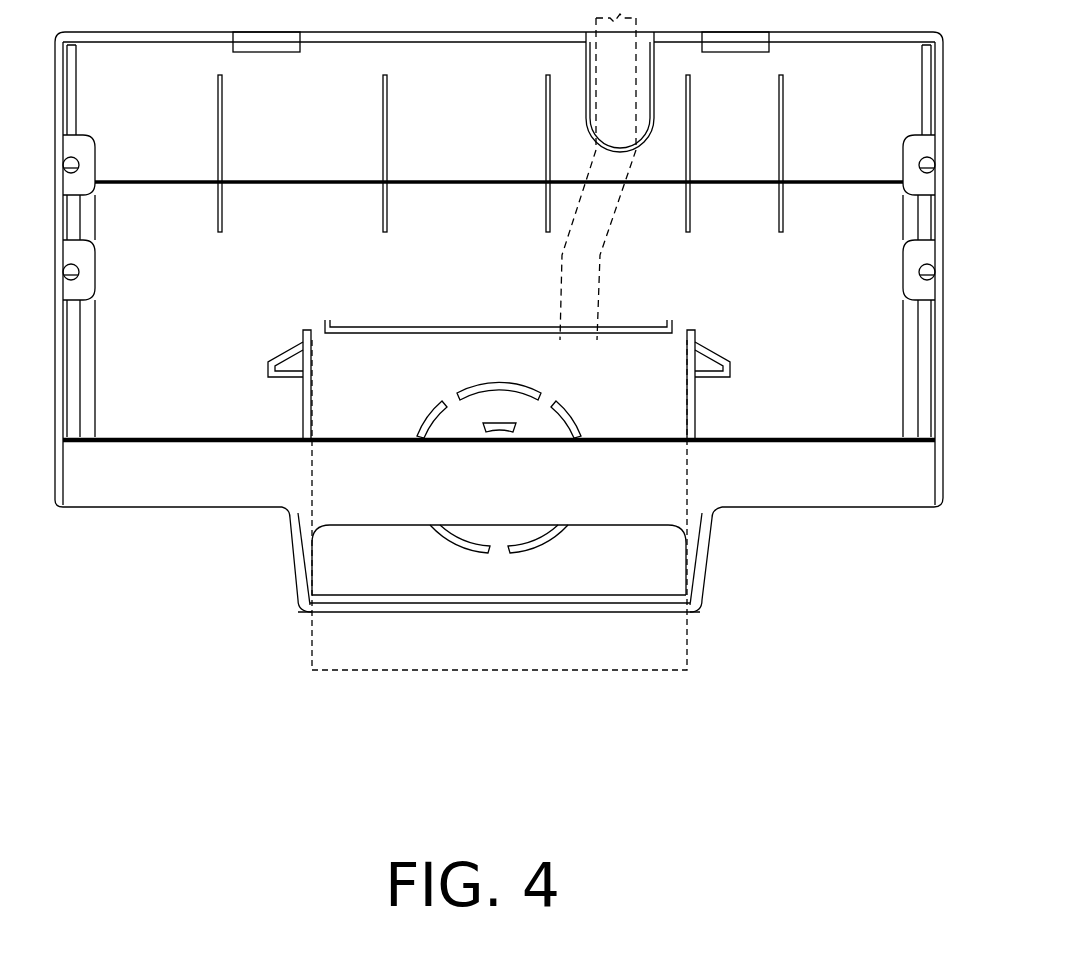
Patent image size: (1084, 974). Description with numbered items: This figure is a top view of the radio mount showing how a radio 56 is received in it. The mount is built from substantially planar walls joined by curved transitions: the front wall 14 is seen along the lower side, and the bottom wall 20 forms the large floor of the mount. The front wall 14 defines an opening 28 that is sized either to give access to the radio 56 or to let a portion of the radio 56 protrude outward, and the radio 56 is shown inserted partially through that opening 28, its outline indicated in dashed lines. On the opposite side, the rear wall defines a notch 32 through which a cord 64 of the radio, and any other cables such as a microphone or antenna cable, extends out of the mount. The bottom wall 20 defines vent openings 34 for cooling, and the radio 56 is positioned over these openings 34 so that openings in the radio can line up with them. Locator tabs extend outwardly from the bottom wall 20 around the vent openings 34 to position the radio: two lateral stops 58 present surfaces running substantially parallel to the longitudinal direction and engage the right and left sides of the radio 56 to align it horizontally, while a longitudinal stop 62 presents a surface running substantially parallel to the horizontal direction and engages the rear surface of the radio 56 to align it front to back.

The front wall 14 is at (516, 494).
The bottom wall 20 is at (823, 376).
The opening 28 is at (317, 527).
The notch 32 is at (656, 68).
The openings 34 is at (460, 391).
The radio 56 is at (400, 672).
The lateral stops 58 is at (292, 418).
The longitudinal stop 62 is at (428, 327).
The cord 64 is at (600, 296).